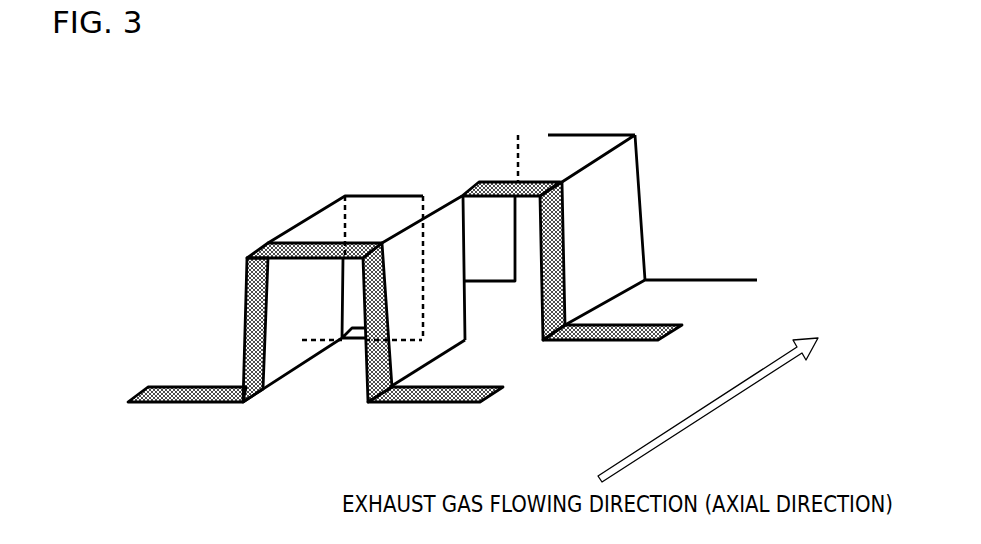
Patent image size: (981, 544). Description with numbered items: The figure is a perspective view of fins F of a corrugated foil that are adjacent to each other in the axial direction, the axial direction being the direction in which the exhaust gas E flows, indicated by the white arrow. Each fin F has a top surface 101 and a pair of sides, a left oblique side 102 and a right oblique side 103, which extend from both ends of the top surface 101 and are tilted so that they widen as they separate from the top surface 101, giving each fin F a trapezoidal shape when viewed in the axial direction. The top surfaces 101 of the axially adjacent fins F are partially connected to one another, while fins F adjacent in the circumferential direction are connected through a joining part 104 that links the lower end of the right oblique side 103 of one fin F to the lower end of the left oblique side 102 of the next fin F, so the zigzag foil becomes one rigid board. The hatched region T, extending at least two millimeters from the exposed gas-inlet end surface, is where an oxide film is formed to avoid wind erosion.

The top surface 101 is at (313, 240).
The left oblique side 102 is at (260, 335).
The right oblique side 103 is at (432, 307).
The joining part 104 is at (442, 387).
The predetermined region T is at (253, 230).
The exhaust gas E is at (219, 351).